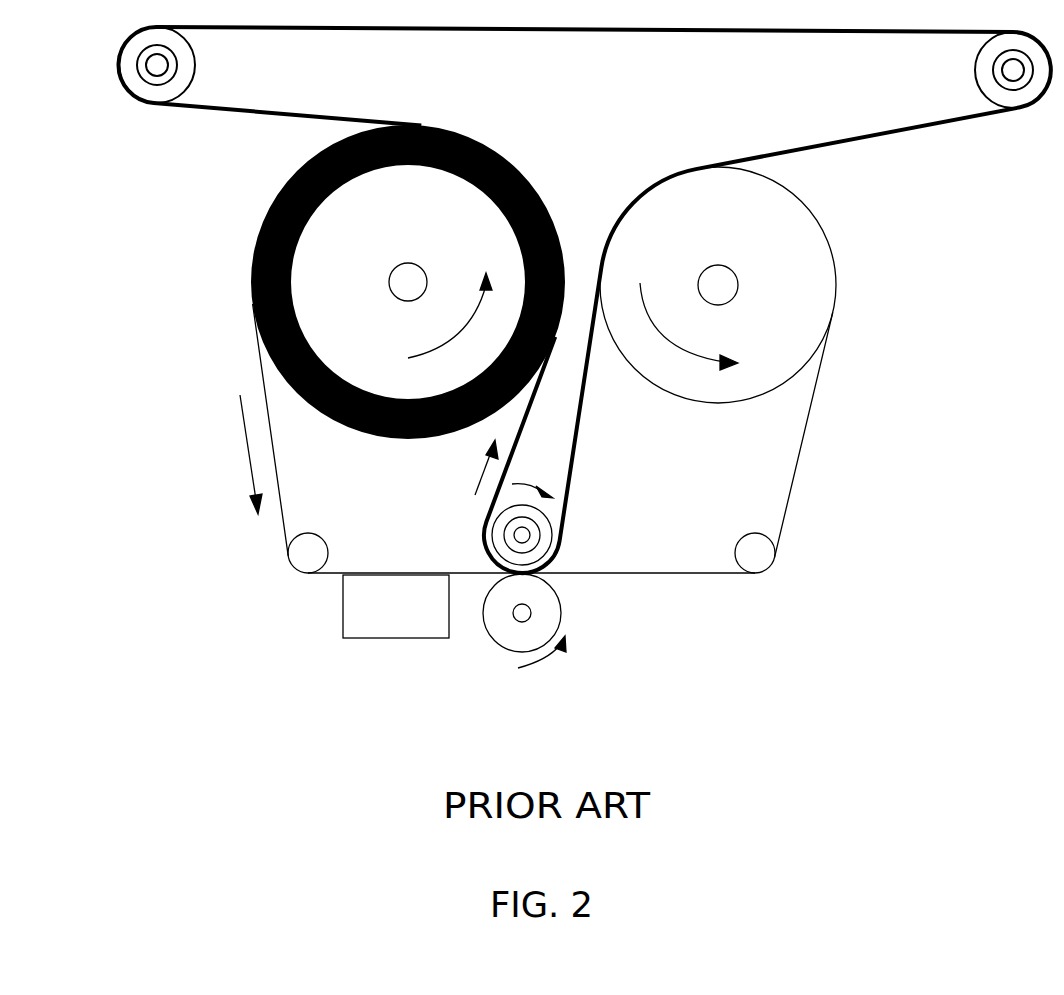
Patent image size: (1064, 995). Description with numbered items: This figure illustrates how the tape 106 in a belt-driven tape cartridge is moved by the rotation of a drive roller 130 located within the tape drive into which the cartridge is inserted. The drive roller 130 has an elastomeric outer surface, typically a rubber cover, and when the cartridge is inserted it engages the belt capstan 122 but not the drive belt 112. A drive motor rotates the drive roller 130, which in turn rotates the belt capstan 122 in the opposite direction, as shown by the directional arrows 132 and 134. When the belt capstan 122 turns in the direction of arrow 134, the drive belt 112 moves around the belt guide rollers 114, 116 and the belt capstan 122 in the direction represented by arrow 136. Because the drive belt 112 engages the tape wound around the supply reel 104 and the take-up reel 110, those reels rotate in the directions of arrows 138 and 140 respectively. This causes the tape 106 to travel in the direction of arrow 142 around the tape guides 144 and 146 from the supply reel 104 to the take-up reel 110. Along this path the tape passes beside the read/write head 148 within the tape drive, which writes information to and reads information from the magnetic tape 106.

The supply reel 104 is at (426, 231).
The tape 106 is at (667, 575).
The take-up reel 110 is at (732, 226).
The drive belt 112 is at (522, 29).
The belt guide roller 114 is at (190, 53).
The belt guide roller 116 is at (980, 88).
The belt capstan 122 is at (524, 535).
The drive roller 130 is at (483, 625).
The directional arrow 132 is at (540, 667).
The directional arrow 134 is at (512, 485).
The arrow 136 is at (477, 489).
The arrow 138 is at (435, 350).
The arrow 140 is at (688, 350).
The arrow 142 is at (242, 432).
The tape guide 144 is at (323, 541).
The tape guide 146 is at (740, 540).
The read/write head 148 is at (343, 607).